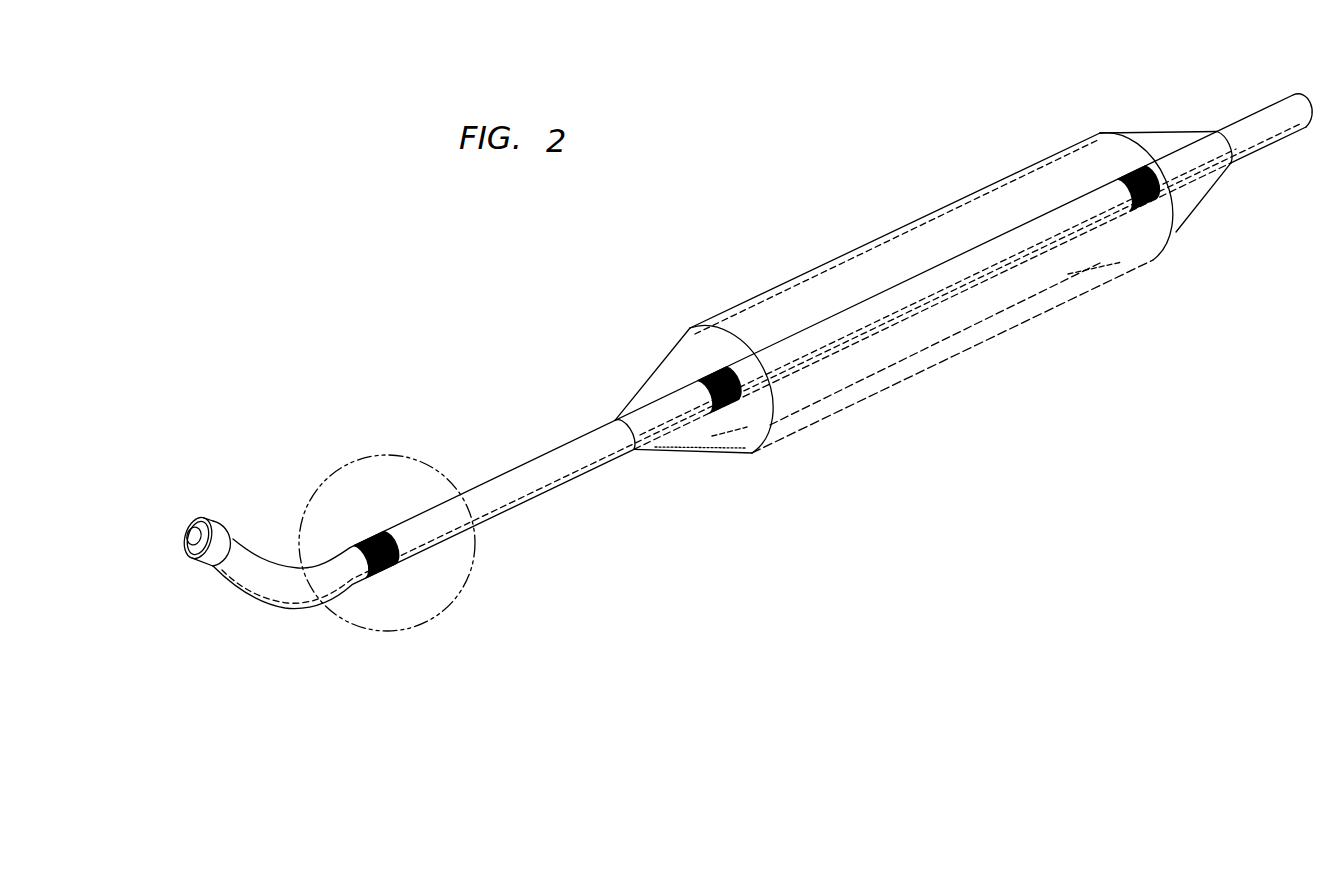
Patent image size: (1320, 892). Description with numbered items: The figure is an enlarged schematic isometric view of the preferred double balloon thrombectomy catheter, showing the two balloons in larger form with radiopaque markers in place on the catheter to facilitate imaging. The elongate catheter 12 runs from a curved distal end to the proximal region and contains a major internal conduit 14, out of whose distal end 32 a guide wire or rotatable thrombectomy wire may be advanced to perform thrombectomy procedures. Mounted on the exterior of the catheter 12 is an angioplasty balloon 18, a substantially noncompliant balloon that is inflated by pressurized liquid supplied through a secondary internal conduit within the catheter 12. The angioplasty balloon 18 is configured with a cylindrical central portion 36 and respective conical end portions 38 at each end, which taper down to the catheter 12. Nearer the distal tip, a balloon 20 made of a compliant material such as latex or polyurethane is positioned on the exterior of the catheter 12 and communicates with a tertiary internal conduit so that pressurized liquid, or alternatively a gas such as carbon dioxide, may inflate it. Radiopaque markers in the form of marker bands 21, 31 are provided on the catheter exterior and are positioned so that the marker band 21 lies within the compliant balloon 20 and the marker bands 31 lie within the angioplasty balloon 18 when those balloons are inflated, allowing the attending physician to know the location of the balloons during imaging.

The catheter 12 is at (522, 488).
The major internal conduit 14 is at (193, 534).
The angioplasty balloon 18 is at (810, 397).
The balloon 20 is at (438, 618).
The marker band 21 is at (365, 540).
The marker bands 31 is at (708, 380).
The distal end 32 is at (185, 557).
The cylindrical central portion 36 is at (1012, 316).
The conical end portions 38 is at (697, 447).